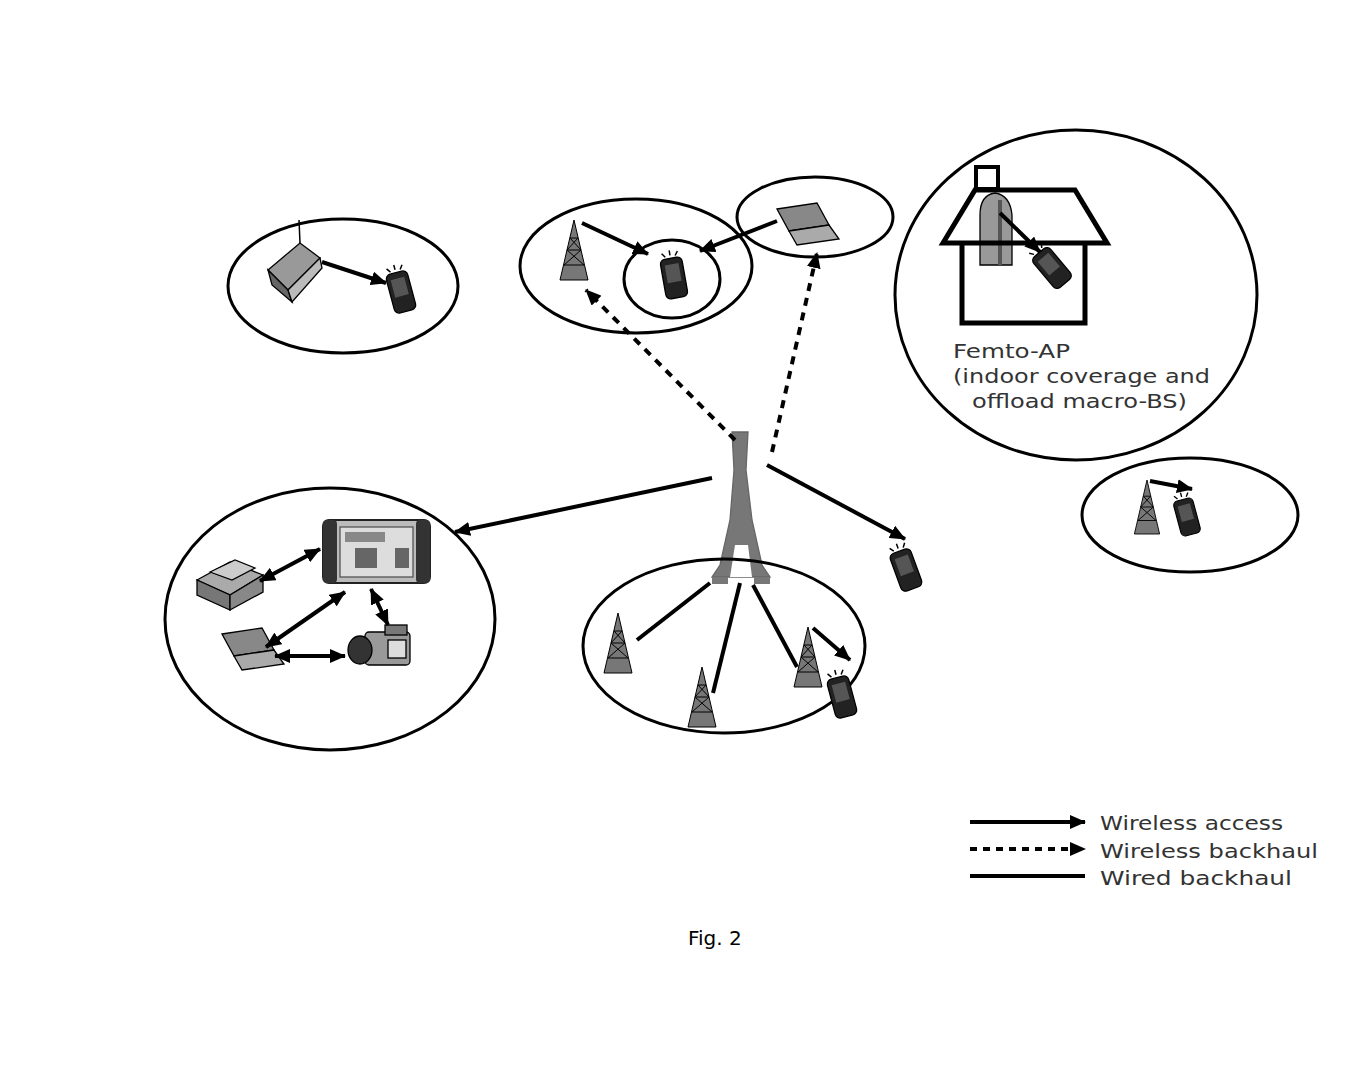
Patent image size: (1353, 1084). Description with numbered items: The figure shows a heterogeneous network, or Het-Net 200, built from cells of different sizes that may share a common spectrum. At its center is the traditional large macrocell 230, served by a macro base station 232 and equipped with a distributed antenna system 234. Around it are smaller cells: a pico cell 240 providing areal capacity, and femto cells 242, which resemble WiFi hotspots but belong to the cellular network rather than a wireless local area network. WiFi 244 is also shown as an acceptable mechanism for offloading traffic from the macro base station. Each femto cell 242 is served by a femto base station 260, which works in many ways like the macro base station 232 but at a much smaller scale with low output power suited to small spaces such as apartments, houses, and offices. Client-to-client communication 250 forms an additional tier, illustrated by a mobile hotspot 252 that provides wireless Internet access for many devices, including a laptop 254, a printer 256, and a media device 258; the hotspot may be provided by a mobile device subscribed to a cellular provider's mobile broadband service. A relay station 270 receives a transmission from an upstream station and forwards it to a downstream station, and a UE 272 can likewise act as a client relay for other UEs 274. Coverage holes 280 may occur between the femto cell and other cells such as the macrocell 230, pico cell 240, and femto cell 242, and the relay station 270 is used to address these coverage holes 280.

The Het-Net 200 is at (197, 170).
The macrocell 230 is at (602, 603).
The macro base station 232 is at (807, 533).
The distributed antenna system 234 is at (713, 787).
The pico cell 240 is at (1082, 529).
The femto cell 242 is at (268, 340).
The WiFi 244 is at (375, 377).
The client-to-client communication 250 is at (313, 663).
The mobile hotspot 252 is at (357, 748).
The laptop 254 is at (215, 648).
The printer 256 is at (197, 587).
The media device 258 is at (412, 640).
The femto base station 260 is at (268, 284).
The relay station 270 is at (503, 190).
The UE acting as relay 272 is at (822, 150).
The other UE 274 is at (680, 238).
The coverage hole 280 is at (718, 282).